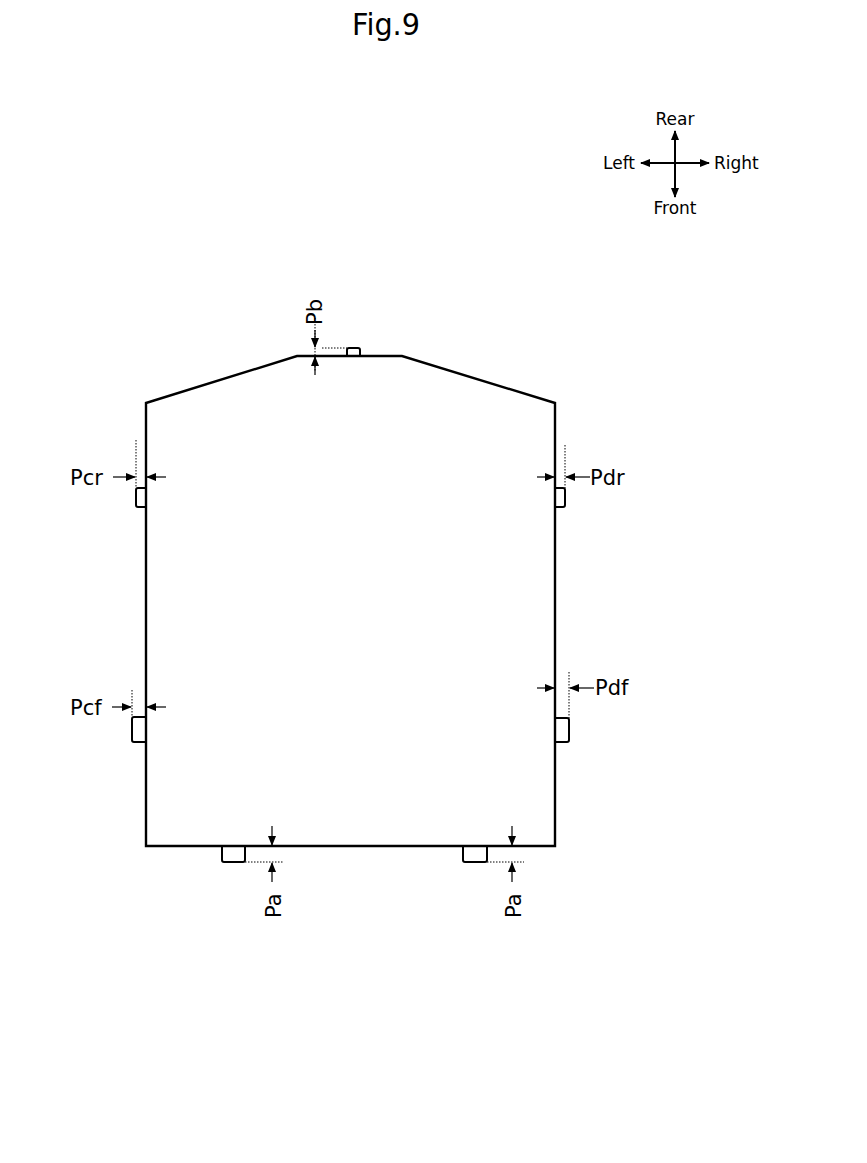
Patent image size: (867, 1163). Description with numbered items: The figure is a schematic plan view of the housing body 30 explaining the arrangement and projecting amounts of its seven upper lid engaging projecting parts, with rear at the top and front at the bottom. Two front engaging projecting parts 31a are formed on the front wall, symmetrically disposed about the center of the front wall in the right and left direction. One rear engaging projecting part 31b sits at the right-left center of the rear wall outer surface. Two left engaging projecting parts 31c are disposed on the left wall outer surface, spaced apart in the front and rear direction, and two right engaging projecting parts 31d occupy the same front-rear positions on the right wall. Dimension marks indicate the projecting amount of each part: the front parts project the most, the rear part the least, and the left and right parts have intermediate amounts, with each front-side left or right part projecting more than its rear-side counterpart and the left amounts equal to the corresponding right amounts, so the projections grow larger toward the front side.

The housing body 30 is at (117, 391).
The front engaging projecting part 31a is at (231, 862).
The rear engaging projecting part 31b is at (352, 348).
The left engaging projecting part 31c is at (136, 497).
The right engaging projecting part 31d is at (565, 497).